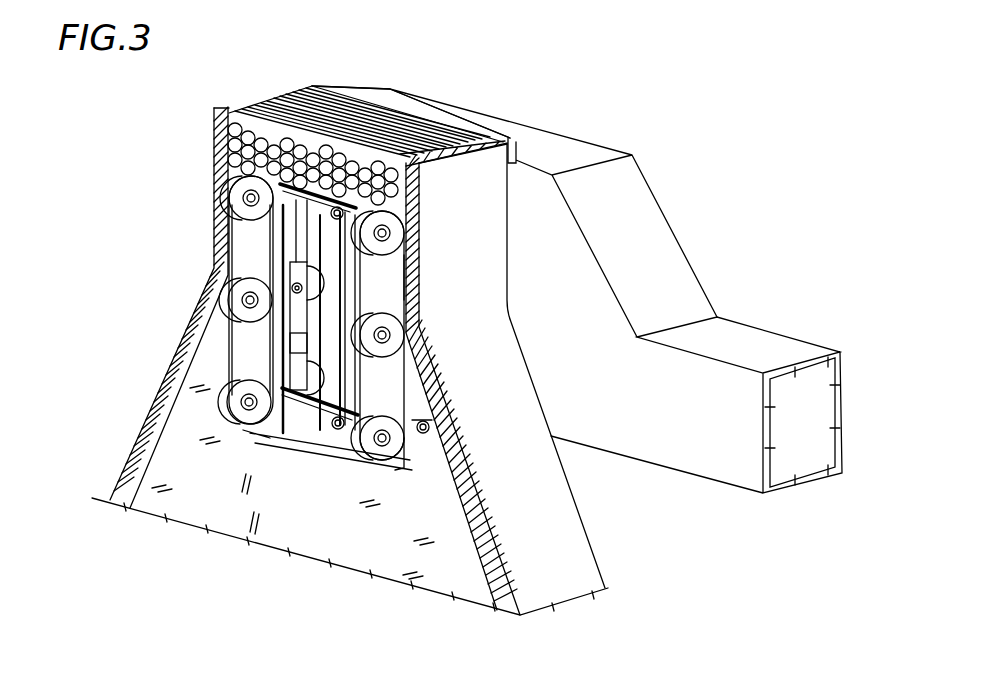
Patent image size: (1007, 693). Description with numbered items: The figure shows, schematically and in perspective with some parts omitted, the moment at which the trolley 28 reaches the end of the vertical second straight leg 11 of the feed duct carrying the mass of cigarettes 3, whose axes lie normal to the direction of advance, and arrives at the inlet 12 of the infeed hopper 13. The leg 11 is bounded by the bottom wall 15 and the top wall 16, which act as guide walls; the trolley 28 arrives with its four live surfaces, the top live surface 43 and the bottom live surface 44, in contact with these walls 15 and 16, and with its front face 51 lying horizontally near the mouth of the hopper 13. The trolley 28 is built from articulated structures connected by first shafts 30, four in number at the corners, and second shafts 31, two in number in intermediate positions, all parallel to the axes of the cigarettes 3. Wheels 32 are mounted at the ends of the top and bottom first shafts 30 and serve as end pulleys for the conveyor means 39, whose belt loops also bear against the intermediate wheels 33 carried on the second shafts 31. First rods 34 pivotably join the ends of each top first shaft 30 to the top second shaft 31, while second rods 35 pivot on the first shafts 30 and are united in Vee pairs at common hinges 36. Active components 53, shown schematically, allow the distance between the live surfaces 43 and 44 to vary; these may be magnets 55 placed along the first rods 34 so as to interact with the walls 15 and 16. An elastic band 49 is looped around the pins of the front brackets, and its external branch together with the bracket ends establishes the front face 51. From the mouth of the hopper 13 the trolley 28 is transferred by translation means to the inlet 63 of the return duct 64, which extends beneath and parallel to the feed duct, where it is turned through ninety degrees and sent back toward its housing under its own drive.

The cigarettes 3 is at (260, 118).
The second straight leg 11 is at (458, 183).
The inlet 12 is at (253, 417).
The infeed hopper 13 is at (545, 565).
The bottom wall 15 is at (397, 276).
The top wall 16 is at (228, 216).
The trolley 28 is at (222, 403).
The first shafts 30 is at (248, 194).
The second shafts 31 is at (250, 282).
The wheels 32 is at (245, 178).
The wheels 33 is at (240, 312).
The first rods 34 is at (300, 258).
The second rods 35 is at (343, 210).
The common hinges 36 is at (330, 440).
The conveyor means 39 is at (222, 362).
The top live surface 43 is at (222, 328).
The bottom live surface 44 is at (411, 388).
The elastic band 49 is at (255, 453).
The front face 51 is at (365, 468).
The active components 53 is at (302, 207).
The magnets 55 is at (282, 190).
The inlet 63 is at (396, 88).
The return duct 64 is at (772, 318).